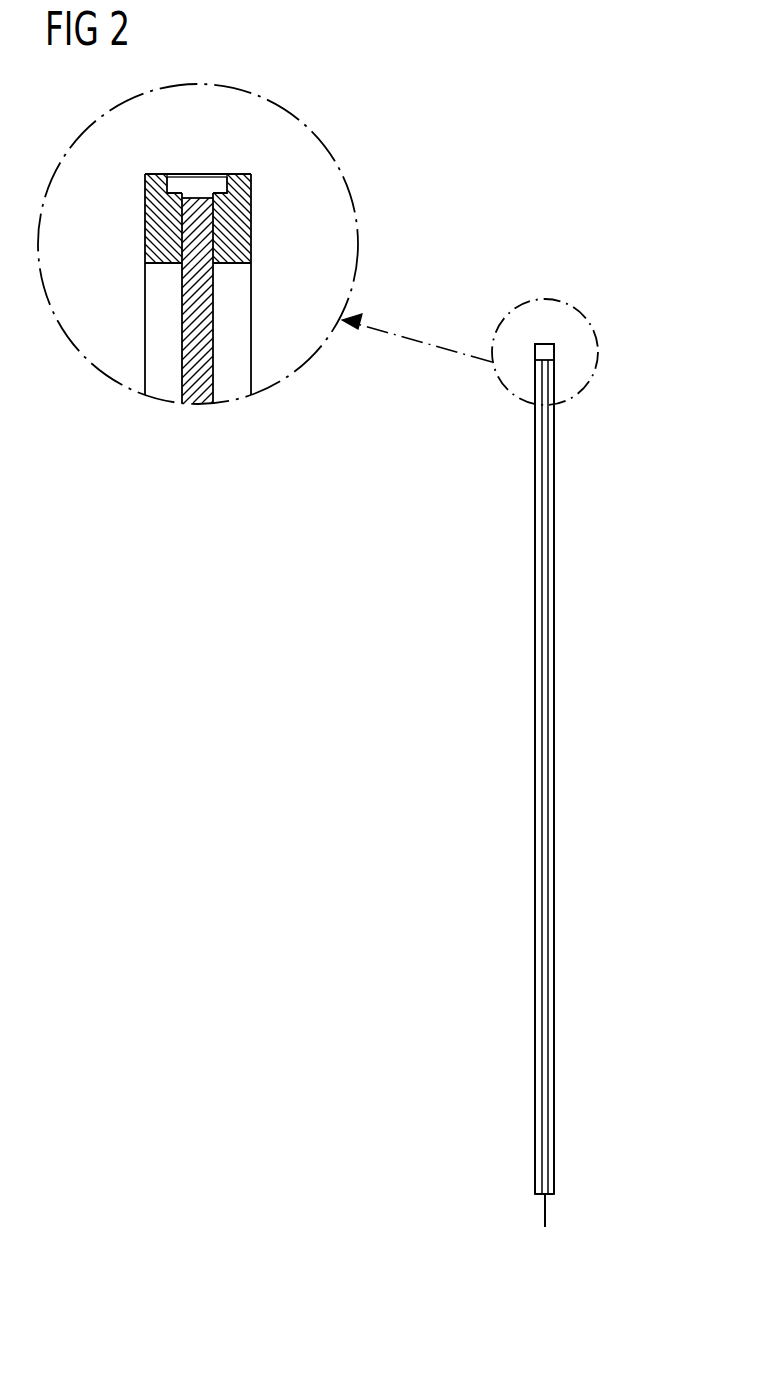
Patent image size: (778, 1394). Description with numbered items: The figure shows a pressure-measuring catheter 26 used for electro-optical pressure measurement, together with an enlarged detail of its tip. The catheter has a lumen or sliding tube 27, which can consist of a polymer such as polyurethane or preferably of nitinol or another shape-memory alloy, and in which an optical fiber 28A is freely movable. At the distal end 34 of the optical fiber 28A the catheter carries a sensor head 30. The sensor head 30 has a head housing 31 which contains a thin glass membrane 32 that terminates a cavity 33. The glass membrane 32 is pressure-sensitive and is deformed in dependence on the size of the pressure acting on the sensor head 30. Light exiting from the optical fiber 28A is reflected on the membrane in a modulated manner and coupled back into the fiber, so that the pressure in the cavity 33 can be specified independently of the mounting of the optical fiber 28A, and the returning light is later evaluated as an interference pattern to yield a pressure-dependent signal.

The pressure-measuring catheter 26 is at (628, 558).
The sliding tube 27 is at (230, 305).
The optical fiber 28A is at (190, 342).
The sensor head 30 is at (138, 210).
The head housing 31 is at (153, 222).
The glass membrane 32 is at (182, 172).
The cavity 33 is at (198, 190).
The distal end 34 is at (545, 340).